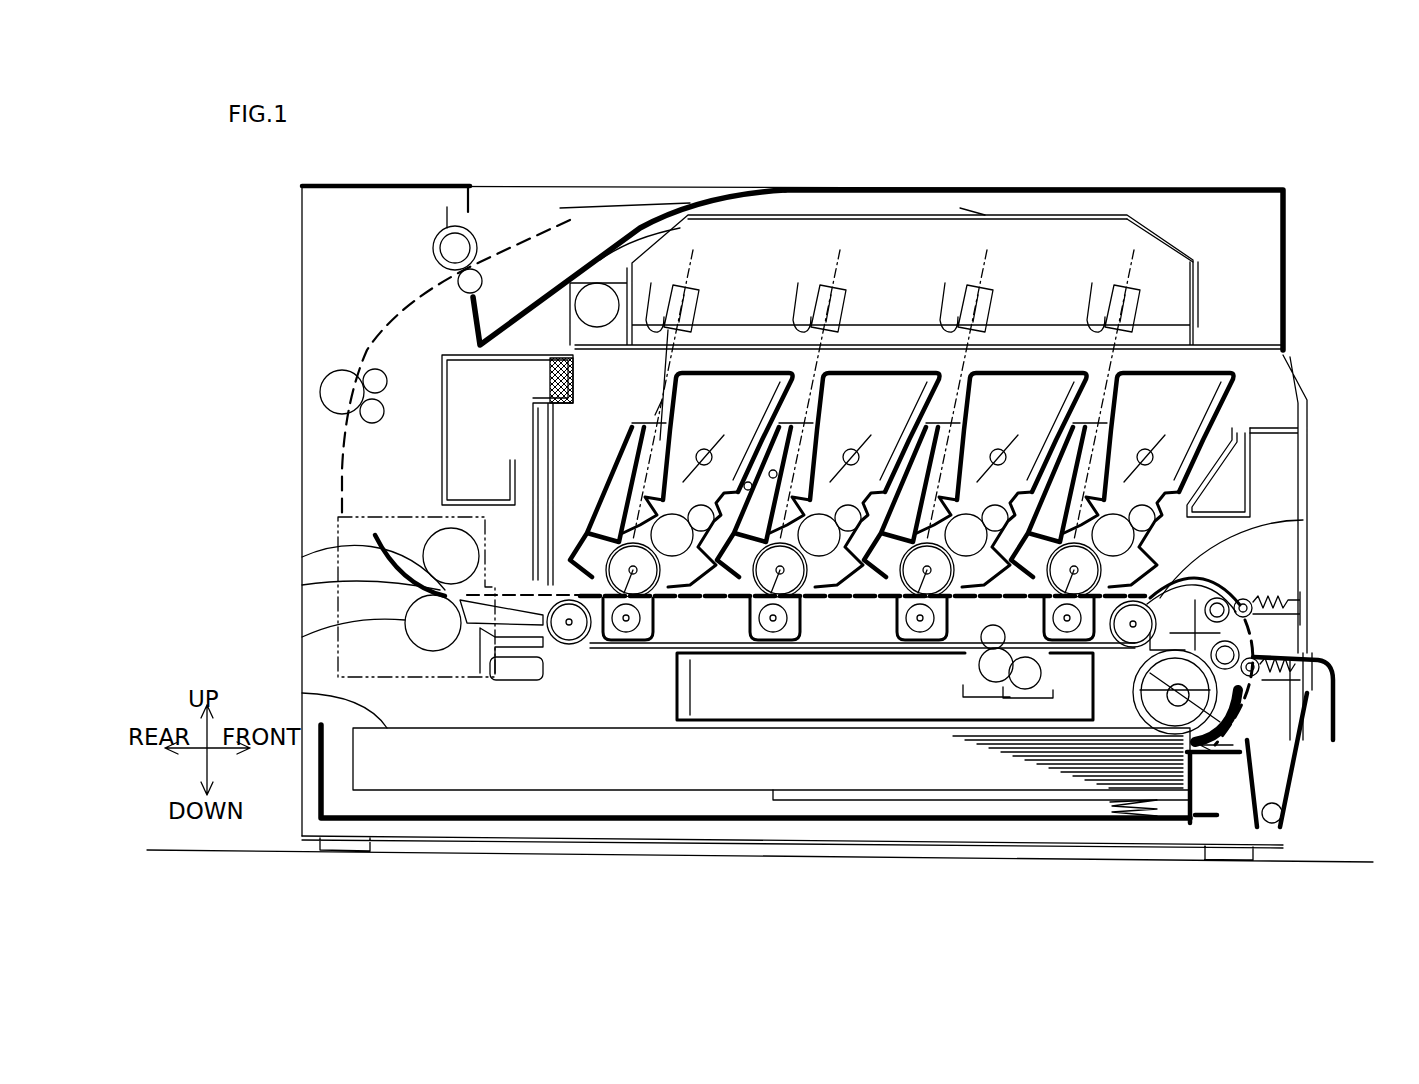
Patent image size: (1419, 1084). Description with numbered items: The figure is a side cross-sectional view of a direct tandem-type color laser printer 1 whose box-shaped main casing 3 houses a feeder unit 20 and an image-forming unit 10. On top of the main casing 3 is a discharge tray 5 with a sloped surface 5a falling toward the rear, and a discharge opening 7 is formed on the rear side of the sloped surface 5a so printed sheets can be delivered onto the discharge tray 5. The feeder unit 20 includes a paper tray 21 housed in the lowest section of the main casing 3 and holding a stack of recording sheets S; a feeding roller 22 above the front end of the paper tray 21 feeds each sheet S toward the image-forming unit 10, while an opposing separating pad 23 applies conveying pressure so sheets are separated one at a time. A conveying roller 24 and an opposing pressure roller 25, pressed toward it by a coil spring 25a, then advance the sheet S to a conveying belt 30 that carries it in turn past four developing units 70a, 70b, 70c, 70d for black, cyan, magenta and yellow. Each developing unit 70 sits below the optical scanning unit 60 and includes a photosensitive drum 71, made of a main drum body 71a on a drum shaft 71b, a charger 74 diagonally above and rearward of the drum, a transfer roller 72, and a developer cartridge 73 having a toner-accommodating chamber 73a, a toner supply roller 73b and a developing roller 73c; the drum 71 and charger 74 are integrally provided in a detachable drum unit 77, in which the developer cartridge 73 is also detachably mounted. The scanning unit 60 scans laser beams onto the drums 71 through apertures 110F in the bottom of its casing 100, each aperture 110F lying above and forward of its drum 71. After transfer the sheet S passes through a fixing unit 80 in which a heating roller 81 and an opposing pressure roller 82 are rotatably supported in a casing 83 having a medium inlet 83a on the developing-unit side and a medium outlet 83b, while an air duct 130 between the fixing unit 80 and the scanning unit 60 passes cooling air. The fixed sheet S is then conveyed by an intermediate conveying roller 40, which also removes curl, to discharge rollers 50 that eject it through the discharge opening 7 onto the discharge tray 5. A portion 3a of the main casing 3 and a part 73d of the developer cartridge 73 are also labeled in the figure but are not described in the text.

The color laser printer 1 is at (1318, 175).
The main casing 3 is at (1240, 190).
The sheet guide member 3a is at (508, 682).
The discharge tray 5 is at (538, 207).
The sloped surface 5a is at (585, 212).
The discharge opening 7 is at (482, 255).
The image-forming unit 10 is at (965, 197).
The feeder unit 20 is at (1235, 742).
The paper tray 21 is at (320, 782).
The feeding roller 22 is at (1222, 712).
The separating pad 23 is at (1218, 714).
The conveying roller 24 is at (1229, 600).
The pressure roller 25 is at (1252, 605).
The coil spring 25a is at (1275, 604).
The conveying belt 30 is at (1160, 583).
The intermediate conveying roller 40 is at (326, 380).
The discharge rollers 50 is at (447, 207).
The optical scanning unit 60 is at (820, 207).
The developing unit 70 is at (1001, 372).
The developing unit 70a is at (1200, 378).
The developing unit 70b is at (1060, 375).
The developing unit 70c is at (905, 372).
The developing unit 70d is at (760, 372).
The photosensitive drum 71 is at (555, 642).
The main drum body 71a is at (603, 642).
The drum shaft 71b is at (623, 642).
The transfer roller 72 is at (647, 642).
The developer cartridge 73 is at (693, 642).
The toner-accommodating chamber 73a is at (668, 330).
The toner supply roller 73b is at (773, 470).
The developing roller 73c is at (748, 480).
The toner hopper 73d is at (660, 420).
The charger 74 is at (553, 467).
The drum unit 77 is at (1217, 483).
The fixing unit 80 is at (450, 692).
The heating roller 81 is at (410, 600).
The pressure roller 82 is at (405, 620).
The casing 83 is at (442, 545).
The medium inlet 83a is at (433, 557).
The medium outlet 83b is at (400, 597).
The casing 100 is at (1195, 265).
The aperture 110F is at (695, 275).
The air duct 130 is at (497, 373).
The recording sheet S is at (300, 693).